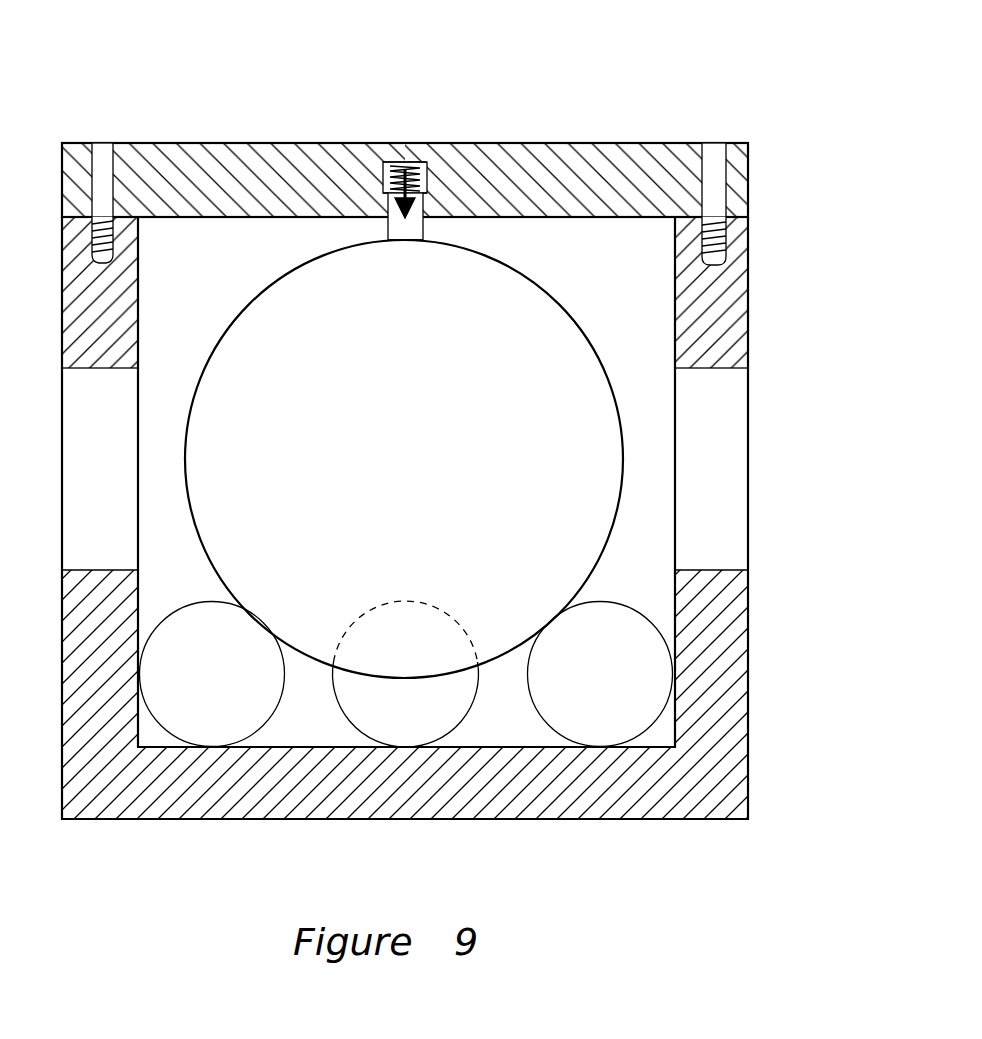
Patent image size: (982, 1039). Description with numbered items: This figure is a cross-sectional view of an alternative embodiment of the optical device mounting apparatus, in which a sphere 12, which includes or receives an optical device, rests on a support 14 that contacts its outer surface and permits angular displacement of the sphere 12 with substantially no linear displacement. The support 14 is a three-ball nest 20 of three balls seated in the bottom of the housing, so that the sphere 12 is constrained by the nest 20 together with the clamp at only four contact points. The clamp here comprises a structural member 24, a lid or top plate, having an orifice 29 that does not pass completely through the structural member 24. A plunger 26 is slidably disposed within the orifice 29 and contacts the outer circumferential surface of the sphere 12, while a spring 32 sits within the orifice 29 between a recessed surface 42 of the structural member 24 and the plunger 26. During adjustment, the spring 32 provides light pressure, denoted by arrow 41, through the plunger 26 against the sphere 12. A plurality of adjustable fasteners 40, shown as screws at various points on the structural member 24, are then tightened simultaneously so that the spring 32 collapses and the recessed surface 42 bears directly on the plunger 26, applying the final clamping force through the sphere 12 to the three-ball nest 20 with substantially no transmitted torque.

The sphere 12 is at (625, 448).
The support 14 is at (713, 782).
The three-ball nest 20 is at (253, 718).
The structural member 24 is at (752, 180).
The plunger 26 is at (428, 207).
The orifice 29 is at (437, 157).
The spring 32 is at (417, 152).
The adjustable fasteners 40 is at (102, 142).
The arrow 41 is at (377, 190).
The recessed surface 42 is at (390, 163).